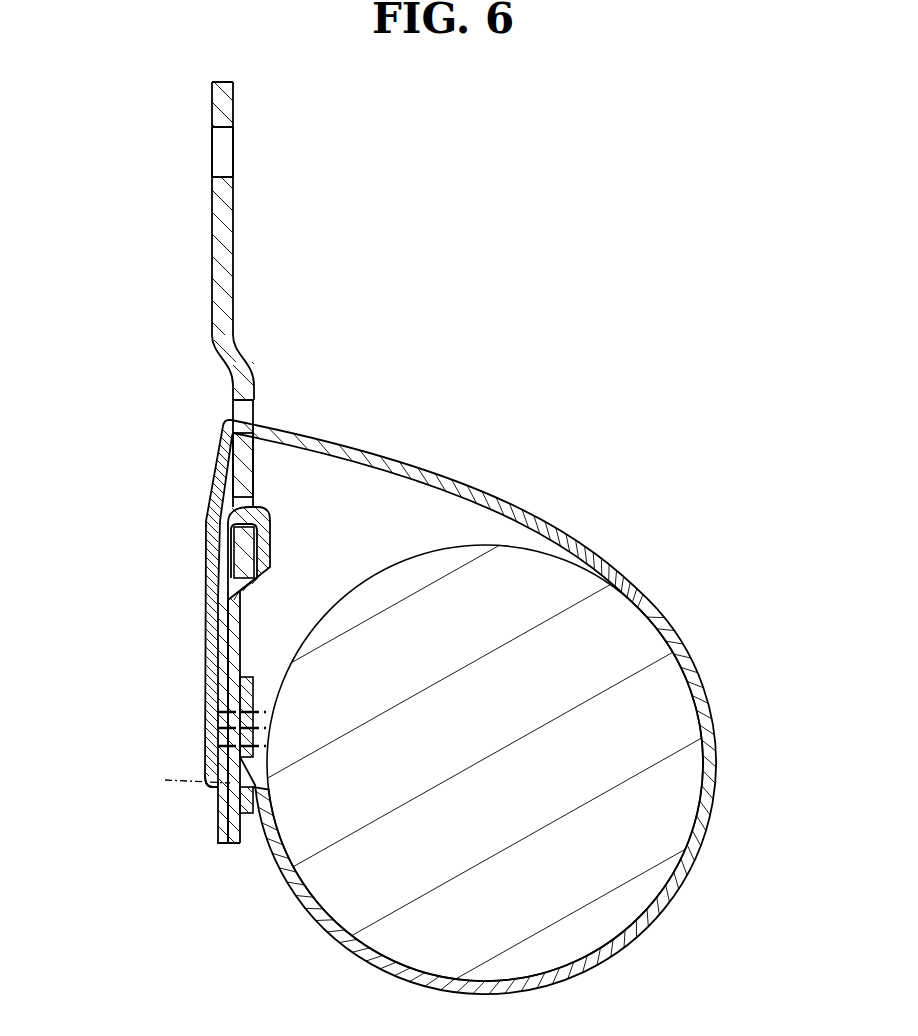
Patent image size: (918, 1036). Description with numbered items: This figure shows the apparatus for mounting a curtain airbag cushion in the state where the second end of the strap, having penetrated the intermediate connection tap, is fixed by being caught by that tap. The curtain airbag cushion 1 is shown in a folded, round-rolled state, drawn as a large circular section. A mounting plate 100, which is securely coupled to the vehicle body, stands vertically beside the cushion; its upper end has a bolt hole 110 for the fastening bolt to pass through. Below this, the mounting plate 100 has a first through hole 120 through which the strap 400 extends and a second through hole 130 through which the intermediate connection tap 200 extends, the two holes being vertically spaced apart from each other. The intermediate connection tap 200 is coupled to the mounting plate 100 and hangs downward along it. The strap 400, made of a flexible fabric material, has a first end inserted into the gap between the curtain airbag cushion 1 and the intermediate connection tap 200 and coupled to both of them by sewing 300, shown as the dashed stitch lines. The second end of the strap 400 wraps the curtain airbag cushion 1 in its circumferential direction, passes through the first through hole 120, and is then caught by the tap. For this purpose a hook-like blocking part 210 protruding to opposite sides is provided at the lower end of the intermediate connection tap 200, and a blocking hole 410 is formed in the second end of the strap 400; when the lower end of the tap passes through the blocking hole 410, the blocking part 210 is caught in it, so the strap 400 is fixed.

The curtain airbag cushion 1 is at (680, 790).
The mounting plate 100 is at (212, 242).
The bolt hole 110 is at (212, 150).
The first through hole 120 is at (244, 398).
The second through hole 130 is at (243, 494).
The intermediate connection tap 200 is at (240, 641).
The blocking part 210 is at (217, 821).
The sewing 300 is at (233, 748).
The strap 400 is at (556, 529).
The blocking hole 410 is at (165, 780).